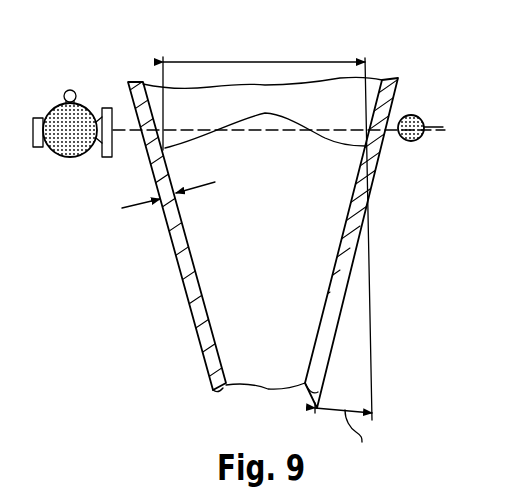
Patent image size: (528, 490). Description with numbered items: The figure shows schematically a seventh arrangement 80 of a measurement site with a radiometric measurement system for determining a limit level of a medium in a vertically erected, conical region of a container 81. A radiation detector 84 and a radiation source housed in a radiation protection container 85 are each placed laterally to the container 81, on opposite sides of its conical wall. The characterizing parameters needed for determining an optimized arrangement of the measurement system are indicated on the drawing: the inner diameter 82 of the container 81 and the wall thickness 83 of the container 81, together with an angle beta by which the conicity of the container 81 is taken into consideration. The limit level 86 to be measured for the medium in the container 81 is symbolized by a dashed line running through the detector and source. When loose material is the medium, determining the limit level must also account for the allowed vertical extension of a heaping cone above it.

The seventh arrangement 80 is at (306, 258).
The container 81 is at (193, 300).
The inner diameter 82 is at (252, 62).
The wall thickness 83 is at (135, 205).
The radiation detector 84 is at (420, 139).
The radiation protection container 85 is at (68, 152).
The limit level 86 is at (435, 128).